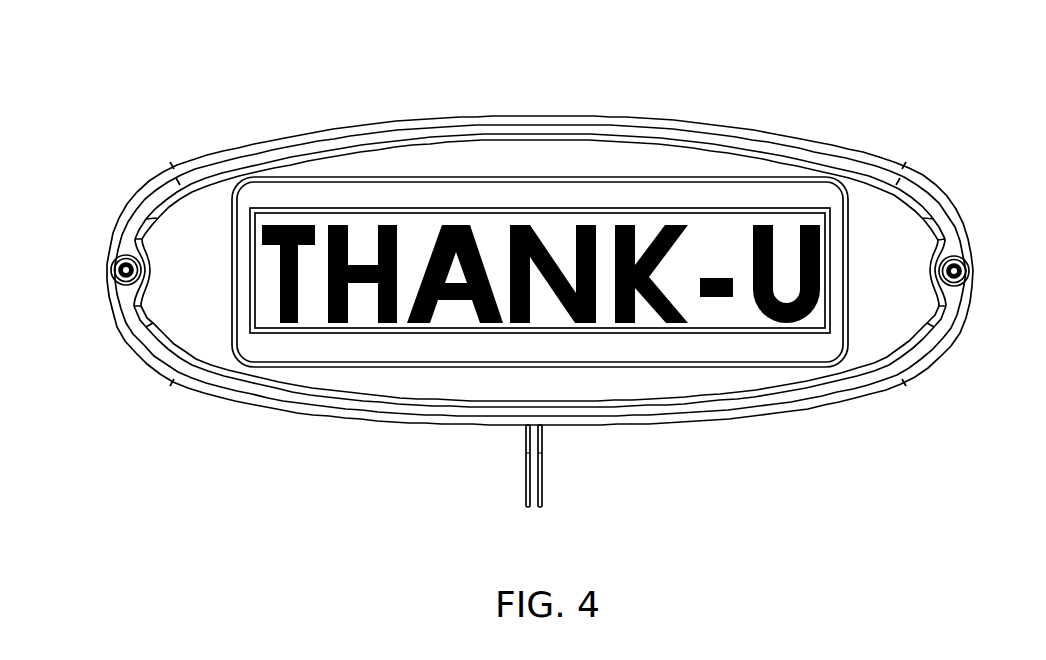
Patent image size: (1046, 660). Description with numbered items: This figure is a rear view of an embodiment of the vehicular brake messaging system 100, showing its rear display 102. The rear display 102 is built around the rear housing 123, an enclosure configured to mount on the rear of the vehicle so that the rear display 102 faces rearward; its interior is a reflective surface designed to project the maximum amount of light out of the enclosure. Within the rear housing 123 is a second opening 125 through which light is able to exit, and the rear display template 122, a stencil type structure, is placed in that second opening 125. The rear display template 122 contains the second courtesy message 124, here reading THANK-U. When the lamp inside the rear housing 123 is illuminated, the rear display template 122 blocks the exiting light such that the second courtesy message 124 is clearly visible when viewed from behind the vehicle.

The vehicular brake messaging system 100 is at (137, 117).
The rear display 102 is at (260, 142).
The rear display template 122 is at (527, 117).
The rear housing 123 is at (825, 143).
The second courtesy message 124 is at (595, 243).
The second opening 125 is at (713, 317).